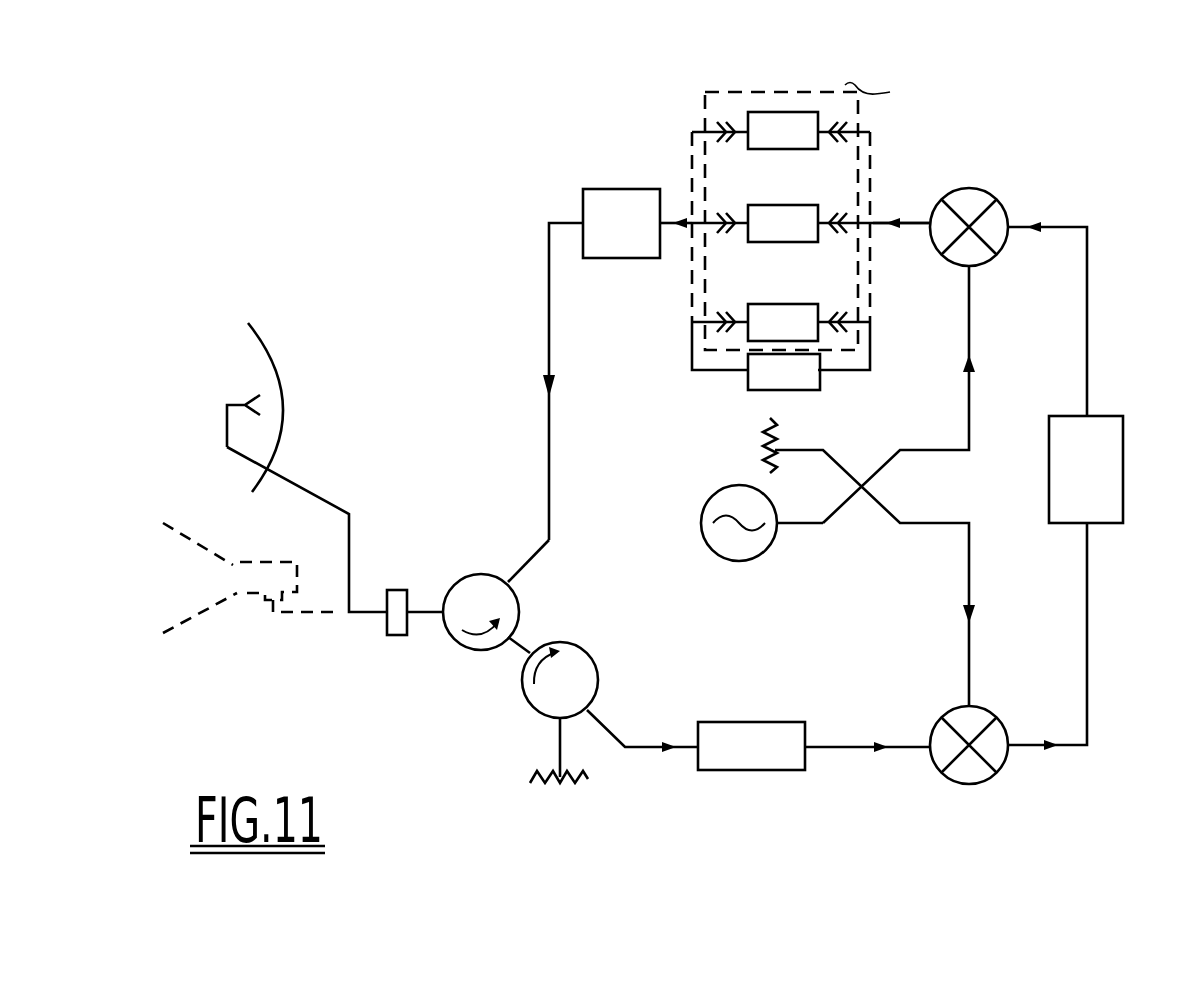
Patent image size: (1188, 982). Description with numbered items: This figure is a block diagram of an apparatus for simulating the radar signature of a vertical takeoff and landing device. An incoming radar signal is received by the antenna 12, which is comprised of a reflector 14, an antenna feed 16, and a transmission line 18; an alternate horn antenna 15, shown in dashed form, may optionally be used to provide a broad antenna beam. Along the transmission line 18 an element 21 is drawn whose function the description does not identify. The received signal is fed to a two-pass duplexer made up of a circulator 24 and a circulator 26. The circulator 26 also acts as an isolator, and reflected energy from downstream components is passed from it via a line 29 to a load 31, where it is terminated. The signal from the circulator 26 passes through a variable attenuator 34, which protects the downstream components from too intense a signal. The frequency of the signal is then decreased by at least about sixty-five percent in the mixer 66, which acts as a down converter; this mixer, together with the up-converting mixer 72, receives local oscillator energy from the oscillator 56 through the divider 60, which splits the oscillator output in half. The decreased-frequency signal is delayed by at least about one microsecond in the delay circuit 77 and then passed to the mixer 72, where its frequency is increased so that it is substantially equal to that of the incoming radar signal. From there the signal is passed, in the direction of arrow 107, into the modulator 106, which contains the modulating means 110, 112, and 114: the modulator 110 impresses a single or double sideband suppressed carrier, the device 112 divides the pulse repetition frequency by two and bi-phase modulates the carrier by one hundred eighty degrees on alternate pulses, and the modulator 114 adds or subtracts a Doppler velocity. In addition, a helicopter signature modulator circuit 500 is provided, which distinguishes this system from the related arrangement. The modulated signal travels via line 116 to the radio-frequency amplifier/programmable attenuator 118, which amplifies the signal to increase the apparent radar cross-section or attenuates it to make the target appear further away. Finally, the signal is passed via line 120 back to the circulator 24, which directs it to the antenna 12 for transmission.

The antenna 12 is at (275, 401).
The reflector 14 is at (276, 362).
The alternate horn antenna 15 is at (213, 548).
The antenna feed 16 is at (237, 403).
The transmission line 18 is at (243, 457).
The waveguide section 21 is at (395, 637).
The circulator 24 is at (520, 597).
The circulator 26 is at (600, 655).
The line 29 is at (558, 740).
The load 31 is at (585, 773).
The variable attenuator 34 is at (751, 746).
The oscillator 56 is at (707, 503).
The divider 60 is at (873, 477).
The mixer 66 is at (940, 766).
The mixer 72 is at (995, 196).
The delay circuit 77 is at (1065, 583).
The modulator 106 is at (764, 92).
The arrow 107 is at (895, 223).
The modulator 110 is at (781, 130).
The modulating device 112 is at (782, 223).
The modulator 114 is at (781, 322).
The line 116 is at (680, 223).
The radio-frequency amplifier/programmable attenuator 118 is at (637, 223).
The line 120 is at (549, 290).
The helicopter signature modulator circuit 500 is at (784, 372).